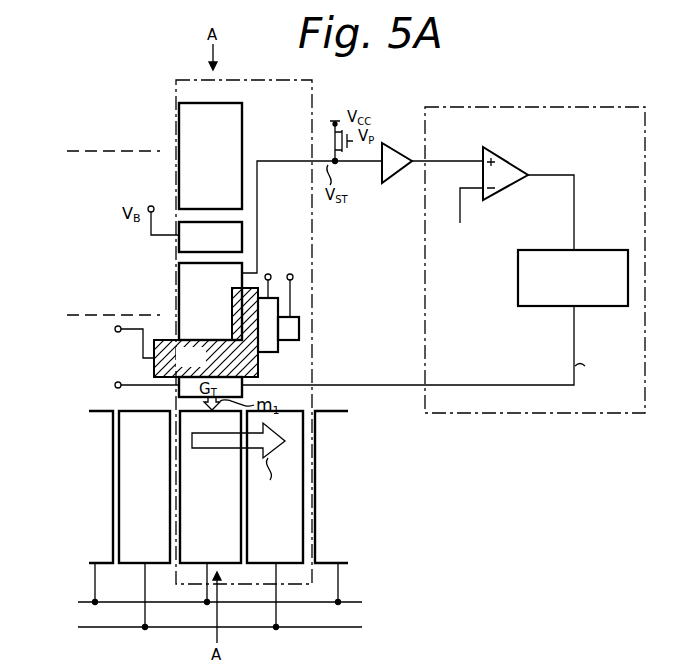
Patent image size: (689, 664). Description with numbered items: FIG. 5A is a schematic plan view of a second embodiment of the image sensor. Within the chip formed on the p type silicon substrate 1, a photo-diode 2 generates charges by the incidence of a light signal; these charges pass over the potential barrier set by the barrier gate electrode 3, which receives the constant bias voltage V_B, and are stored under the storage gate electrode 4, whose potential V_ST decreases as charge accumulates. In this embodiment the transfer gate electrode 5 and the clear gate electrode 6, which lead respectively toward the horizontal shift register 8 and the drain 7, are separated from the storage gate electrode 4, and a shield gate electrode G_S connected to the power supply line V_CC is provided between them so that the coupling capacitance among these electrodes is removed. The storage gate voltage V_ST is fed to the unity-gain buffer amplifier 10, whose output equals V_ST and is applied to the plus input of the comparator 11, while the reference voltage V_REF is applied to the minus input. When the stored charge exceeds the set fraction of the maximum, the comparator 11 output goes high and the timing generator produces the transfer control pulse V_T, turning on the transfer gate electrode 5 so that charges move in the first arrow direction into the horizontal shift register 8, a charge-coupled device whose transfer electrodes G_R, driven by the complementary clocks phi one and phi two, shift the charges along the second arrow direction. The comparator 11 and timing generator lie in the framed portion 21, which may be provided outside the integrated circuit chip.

The p type silicon substrate 1 is at (319, 273).
The photo-diode 2 is at (189, 103).
The barrier gate electrode 3 is at (179, 232).
The storage gate electrode 4 is at (176, 287).
The transfer gate electrode 5 is at (178, 397).
The clear gate electrode 6 is at (276, 352).
The drain 7 is at (299, 329).
The horizontal shift register 8 is at (96, 463).
The buffer amplifier 10 is at (401, 143).
The comparator 11 is at (515, 162).
The portion enclosed by a frame 21 is at (451, 238).